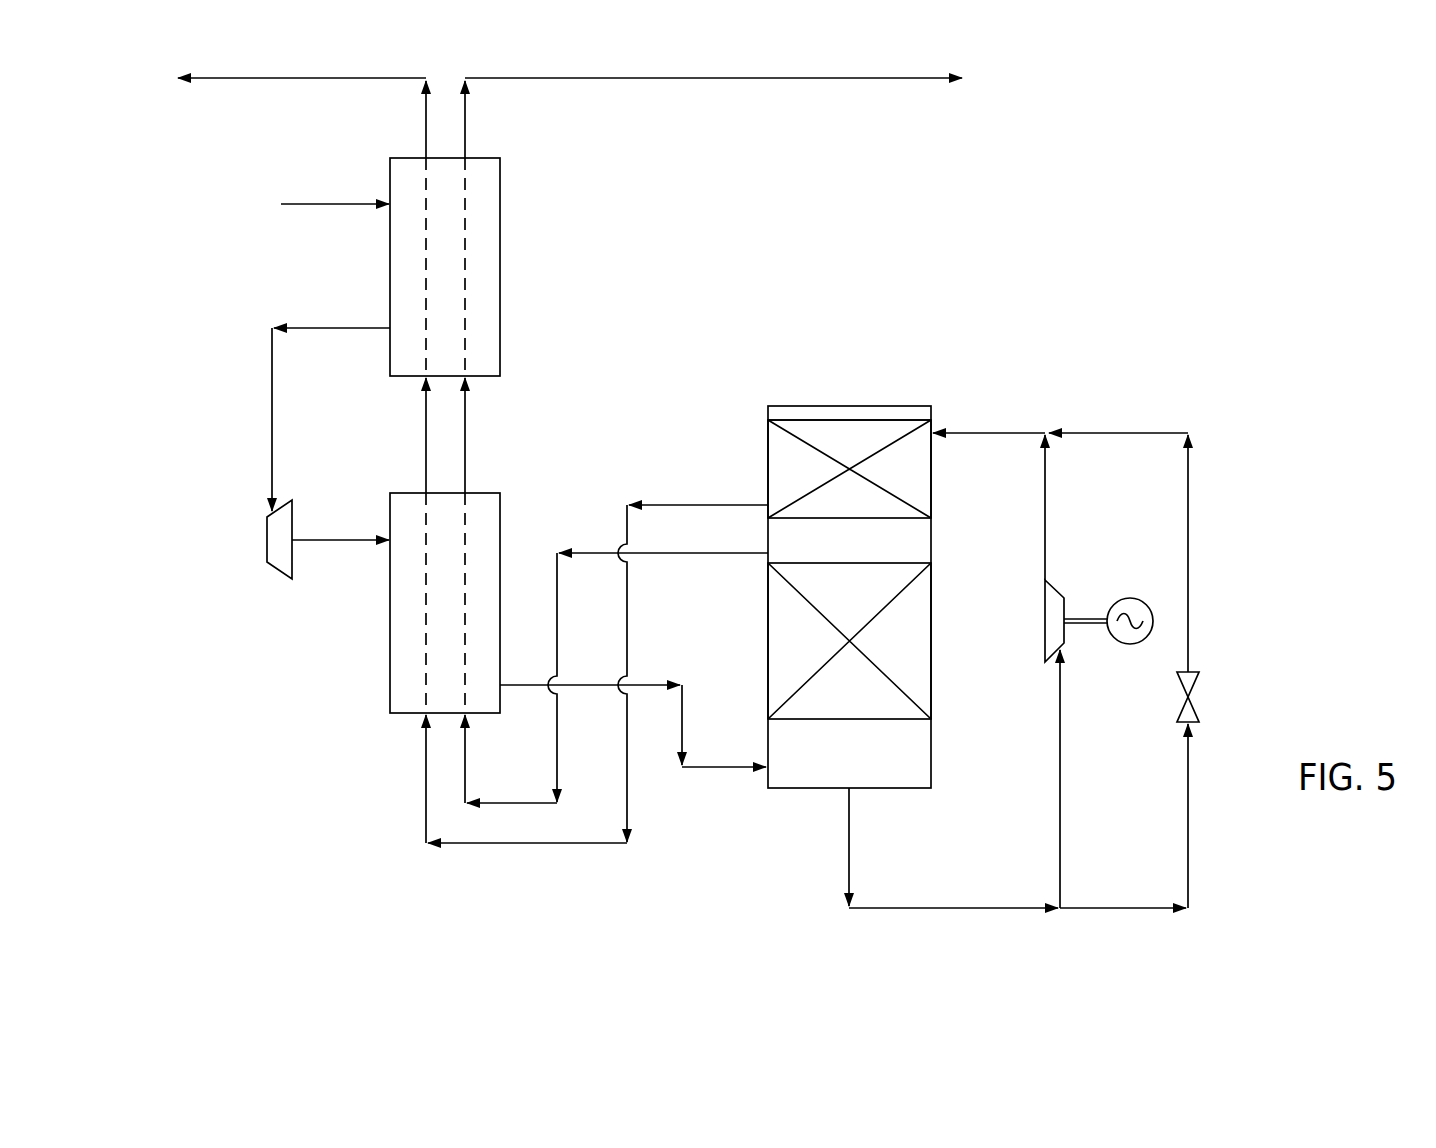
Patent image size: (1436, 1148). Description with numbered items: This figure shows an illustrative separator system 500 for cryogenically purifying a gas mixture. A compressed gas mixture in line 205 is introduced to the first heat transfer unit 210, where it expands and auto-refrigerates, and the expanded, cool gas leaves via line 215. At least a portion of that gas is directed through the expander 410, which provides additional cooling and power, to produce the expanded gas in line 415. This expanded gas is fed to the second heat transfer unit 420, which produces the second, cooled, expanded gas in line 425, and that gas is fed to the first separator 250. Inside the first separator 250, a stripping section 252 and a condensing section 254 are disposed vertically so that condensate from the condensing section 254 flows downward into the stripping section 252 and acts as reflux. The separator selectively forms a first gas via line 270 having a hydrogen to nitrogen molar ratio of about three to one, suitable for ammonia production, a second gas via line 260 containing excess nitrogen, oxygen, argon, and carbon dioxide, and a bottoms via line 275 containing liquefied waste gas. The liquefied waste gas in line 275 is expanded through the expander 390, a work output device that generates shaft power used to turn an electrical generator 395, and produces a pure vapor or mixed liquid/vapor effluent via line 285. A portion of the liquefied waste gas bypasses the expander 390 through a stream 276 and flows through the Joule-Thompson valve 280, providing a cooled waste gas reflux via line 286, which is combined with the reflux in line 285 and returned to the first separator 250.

The separator system 500 is at (1224, 184).
The line 205 is at (314, 200).
The first heat transfer unit 210 is at (390, 268).
The line 215 is at (334, 333).
The first separator 250 is at (930, 405).
The stripping section 252 is at (866, 699).
The condensing section 254 is at (918, 481).
The line 260 is at (232, 80).
The line 270 is at (852, 80).
The line 275 is at (915, 908).
The valve bypass stream 276 is at (1189, 832).
The Joule-Thompson valve 280 is at (1197, 712).
The line 285 is at (1046, 524).
The line 286 is at (1189, 534).
The expander 390 is at (1041, 634).
The electrical generator 395 is at (1131, 645).
The expander 410 is at (267, 543).
The line 415 is at (334, 537).
The second heat transfer unit 420 is at (390, 655).
The line 425 is at (717, 765).